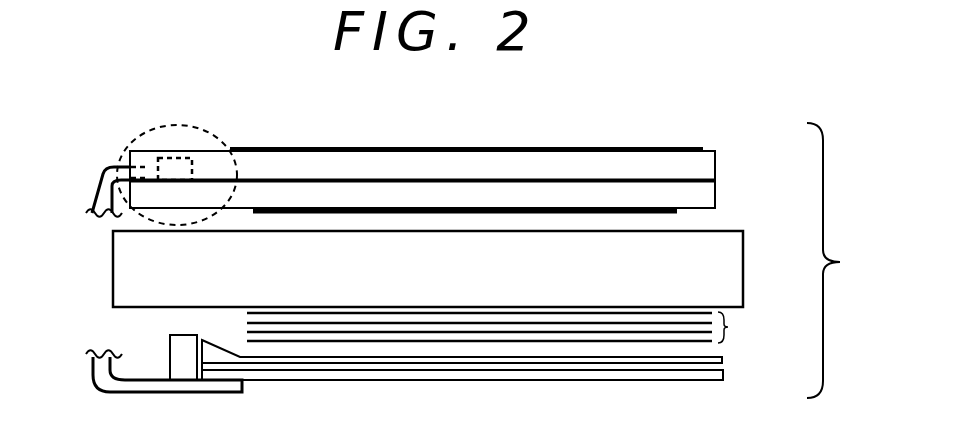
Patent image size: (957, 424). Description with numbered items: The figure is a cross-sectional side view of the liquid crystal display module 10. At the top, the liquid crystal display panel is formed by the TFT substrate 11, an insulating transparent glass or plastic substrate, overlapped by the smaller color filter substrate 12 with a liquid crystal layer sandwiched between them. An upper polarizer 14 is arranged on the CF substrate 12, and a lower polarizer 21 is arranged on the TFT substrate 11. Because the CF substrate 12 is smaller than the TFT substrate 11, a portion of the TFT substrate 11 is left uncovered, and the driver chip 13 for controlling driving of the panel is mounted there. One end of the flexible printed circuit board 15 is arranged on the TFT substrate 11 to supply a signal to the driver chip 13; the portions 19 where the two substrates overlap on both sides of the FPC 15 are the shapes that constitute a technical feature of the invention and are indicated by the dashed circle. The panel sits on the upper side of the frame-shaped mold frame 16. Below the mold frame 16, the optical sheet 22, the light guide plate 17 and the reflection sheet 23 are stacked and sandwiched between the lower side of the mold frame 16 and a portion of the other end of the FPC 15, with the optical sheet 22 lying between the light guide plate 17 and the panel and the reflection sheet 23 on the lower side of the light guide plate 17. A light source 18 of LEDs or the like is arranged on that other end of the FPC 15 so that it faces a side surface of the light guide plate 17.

The liquid crystal display module 10 is at (846, 260).
The TFT substrate 11 is at (707, 193).
The color filter substrate 12 is at (705, 162).
The driver chip 13 is at (158, 167).
The upper polarizer 14 is at (675, 152).
The flexible printed circuit board 15 is at (102, 187).
The mold frame 16 is at (738, 265).
The light guide plate 17 is at (723, 358).
The light source 18 is at (180, 337).
The overlapping portions 19 is at (170, 127).
The lower polarizer 21 is at (677, 213).
The optical sheet 22 is at (508, 330).
The reflection sheet 23 is at (725, 376).